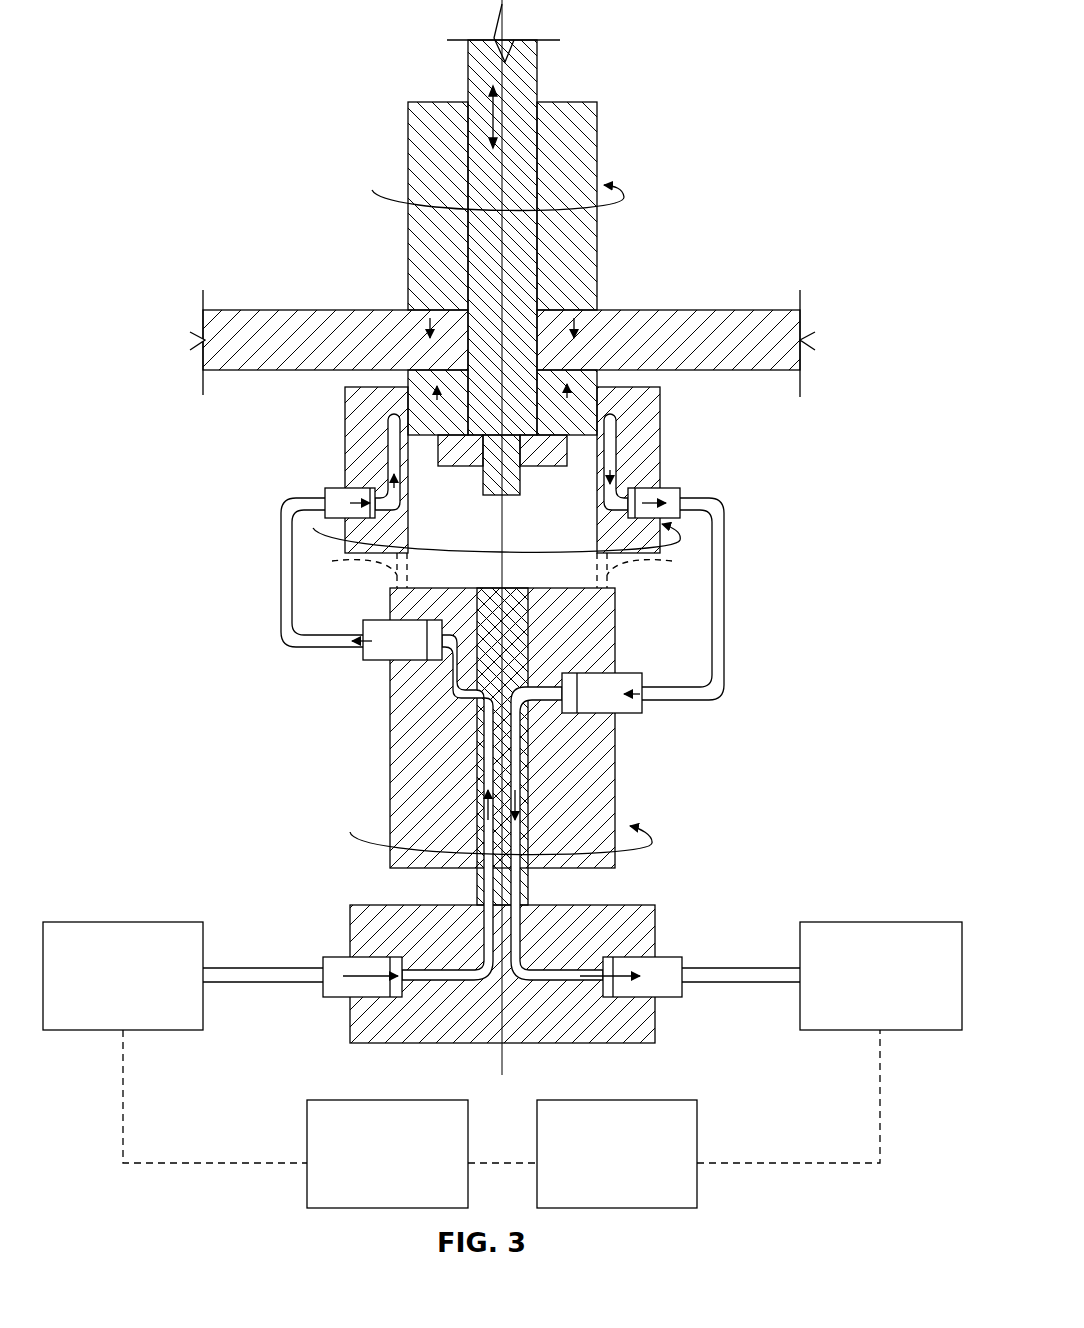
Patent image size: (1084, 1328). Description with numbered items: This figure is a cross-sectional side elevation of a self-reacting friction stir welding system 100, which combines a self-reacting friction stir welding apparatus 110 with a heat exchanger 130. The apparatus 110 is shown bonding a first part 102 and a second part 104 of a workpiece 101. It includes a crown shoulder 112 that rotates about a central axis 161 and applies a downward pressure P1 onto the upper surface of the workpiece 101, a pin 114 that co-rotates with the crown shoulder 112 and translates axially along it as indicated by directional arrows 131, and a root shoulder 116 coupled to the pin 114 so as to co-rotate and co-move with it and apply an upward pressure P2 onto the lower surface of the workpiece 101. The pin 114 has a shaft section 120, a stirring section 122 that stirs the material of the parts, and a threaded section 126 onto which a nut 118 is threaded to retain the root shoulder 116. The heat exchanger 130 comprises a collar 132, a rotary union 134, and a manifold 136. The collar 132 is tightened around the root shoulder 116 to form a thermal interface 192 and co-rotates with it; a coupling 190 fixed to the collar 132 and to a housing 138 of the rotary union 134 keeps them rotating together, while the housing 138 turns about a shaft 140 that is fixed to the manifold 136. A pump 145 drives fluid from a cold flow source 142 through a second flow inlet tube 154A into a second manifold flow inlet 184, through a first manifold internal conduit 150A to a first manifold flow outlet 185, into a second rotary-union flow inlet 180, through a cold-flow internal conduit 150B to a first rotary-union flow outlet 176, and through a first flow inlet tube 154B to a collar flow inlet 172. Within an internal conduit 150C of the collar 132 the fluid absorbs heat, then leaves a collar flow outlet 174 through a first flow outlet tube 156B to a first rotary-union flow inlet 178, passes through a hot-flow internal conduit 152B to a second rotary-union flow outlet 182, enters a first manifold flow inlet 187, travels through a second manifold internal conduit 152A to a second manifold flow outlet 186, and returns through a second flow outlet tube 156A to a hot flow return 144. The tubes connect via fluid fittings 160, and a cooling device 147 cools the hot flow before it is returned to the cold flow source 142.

The self-reacting friction stir welding system 100 is at (772, 60).
The workpiece 101 is at (790, 300).
The first part 102 is at (398, 392).
The second part 104 is at (768, 300).
The self-reacting friction stir welding apparatus 110 is at (547, 253).
The crown shoulder 112 is at (572, 152).
The pin 114 is at (545, 70).
The root shoulder 116 is at (560, 375).
The nut 118 is at (460, 467).
The shaft section 120 is at (538, 137).
The stirring section 122 is at (540, 332).
The threaded section 126 is at (510, 481).
The heat exchanger 130 is at (520, 834).
The directional arrows 131 is at (490, 118).
The collar 132 is at (666, 417).
The rotary union 134 is at (620, 749).
The manifold 136 is at (660, 906).
The housing 138 is at (612, 802).
The shaft 140 is at (527, 773).
The cold flow source 142 is at (123, 976).
The hot flow return 144 is at (881, 976).
The pump 145 is at (387, 1154).
The cooling device 147 is at (617, 1154).
The first manifold internal conduit 150A is at (450, 982).
The cold-flow internal conduit 150B is at (488, 735).
The internal conduit 150C is at (398, 416).
The second manifold internal conduit 152A is at (553, 982).
The hot-flow internal conduit 152B is at (515, 725).
The second flow inlet tube 154A is at (229, 968).
The first flow inlet tube 154B is at (290, 650).
The second flow outlet tube 156A is at (776, 970).
The first flow outlet tube 156B is at (725, 528).
The fluid fittings 160 is at (335, 490).
The central axis 161 is at (506, 19).
The collar flow inlet 172 is at (378, 492).
The collar flow outlet 174 is at (633, 490).
The first rotary-union flow outlet 176 is at (436, 622).
The first rotary-union flow inlet 178 is at (573, 673).
The second rotary-union flow inlet 180 is at (487, 893).
The second rotary-union flow outlet 182 is at (519, 893).
The second manifold flow inlet 184 is at (400, 992).
The first manifold flow outlet 185 is at (486, 936).
The second manifold flow outlet 186 is at (604, 992).
The first manifold flow inlet 187 is at (520, 937).
The coupling 190 is at (333, 562).
The thermal interface 192 is at (420, 386).
The downward pressure P1 is at (430, 316).
The upward pressure P2 is at (416, 390).